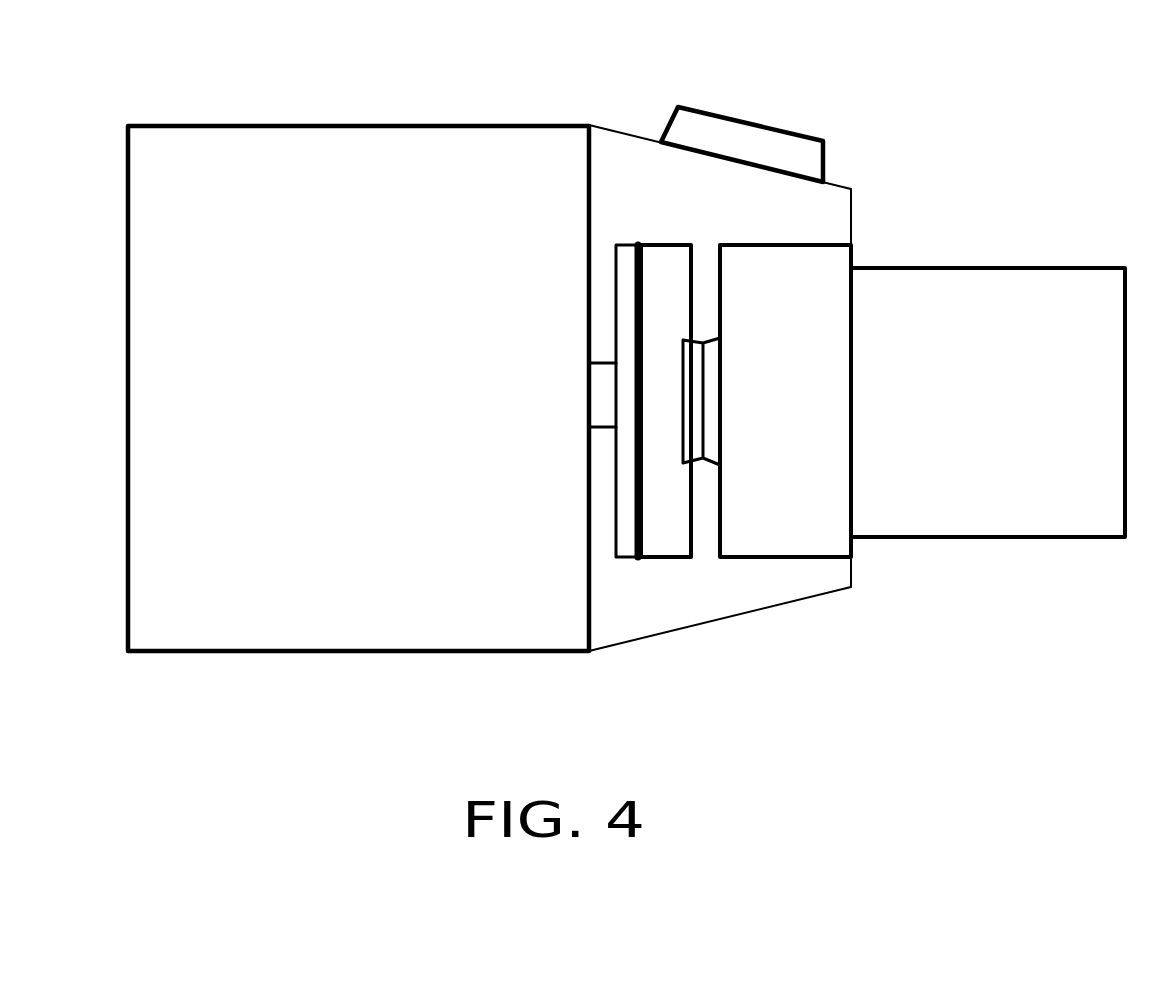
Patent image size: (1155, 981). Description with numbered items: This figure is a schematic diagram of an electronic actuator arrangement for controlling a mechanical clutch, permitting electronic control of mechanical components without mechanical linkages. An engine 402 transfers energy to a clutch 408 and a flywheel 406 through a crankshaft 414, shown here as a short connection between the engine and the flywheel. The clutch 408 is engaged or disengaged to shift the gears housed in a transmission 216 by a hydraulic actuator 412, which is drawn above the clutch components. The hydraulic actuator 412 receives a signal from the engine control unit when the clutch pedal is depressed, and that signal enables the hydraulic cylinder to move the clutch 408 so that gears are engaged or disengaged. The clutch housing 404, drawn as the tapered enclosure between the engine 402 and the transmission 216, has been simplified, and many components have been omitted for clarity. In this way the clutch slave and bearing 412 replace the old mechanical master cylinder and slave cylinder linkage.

The engine 402 is at (278, 627).
The clutch housing 404 is at (770, 603).
The flywheel 406 is at (627, 245).
The clutch 408 is at (660, 253).
The hydraulic actuator 412 is at (805, 143).
The crankshaft 414 is at (605, 410).
The transmission 216 is at (972, 525).